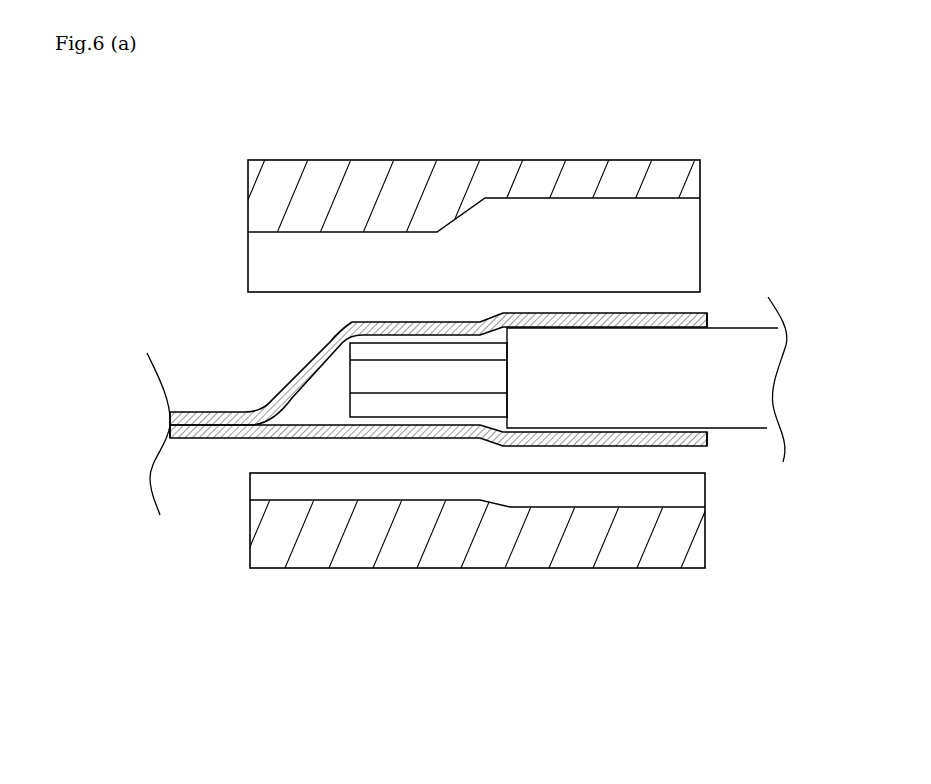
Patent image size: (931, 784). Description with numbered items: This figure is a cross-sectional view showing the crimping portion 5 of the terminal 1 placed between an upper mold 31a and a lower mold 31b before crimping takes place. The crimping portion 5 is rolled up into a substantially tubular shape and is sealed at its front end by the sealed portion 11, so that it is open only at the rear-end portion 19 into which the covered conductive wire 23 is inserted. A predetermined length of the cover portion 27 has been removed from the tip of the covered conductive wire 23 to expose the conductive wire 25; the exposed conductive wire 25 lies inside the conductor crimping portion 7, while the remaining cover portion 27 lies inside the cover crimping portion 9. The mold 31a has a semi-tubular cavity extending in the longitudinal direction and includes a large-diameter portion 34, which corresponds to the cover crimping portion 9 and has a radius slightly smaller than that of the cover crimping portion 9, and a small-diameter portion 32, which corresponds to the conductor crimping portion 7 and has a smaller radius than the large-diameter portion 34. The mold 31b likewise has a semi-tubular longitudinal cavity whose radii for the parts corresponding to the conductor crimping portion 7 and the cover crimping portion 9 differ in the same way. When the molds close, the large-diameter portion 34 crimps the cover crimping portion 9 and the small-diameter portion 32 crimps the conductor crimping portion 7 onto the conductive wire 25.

The terminal 1 is at (463, 480).
The crimping portion 5 is at (417, 660).
The conductor crimping portion 7 is at (422, 428).
The cover crimping portion 9 is at (566, 436).
The sealed portion 11 is at (202, 440).
The rear-end portion 19 is at (705, 437).
The covered conductive wire 23 is at (647, 319).
The conductive wire 25 is at (393, 403).
The cover portion 27 is at (693, 347).
The mold 31a is at (498, 196).
The mold 31b is at (678, 558).
The small-diameter portion 32 is at (295, 228).
The large-diameter portion 34 is at (532, 200).